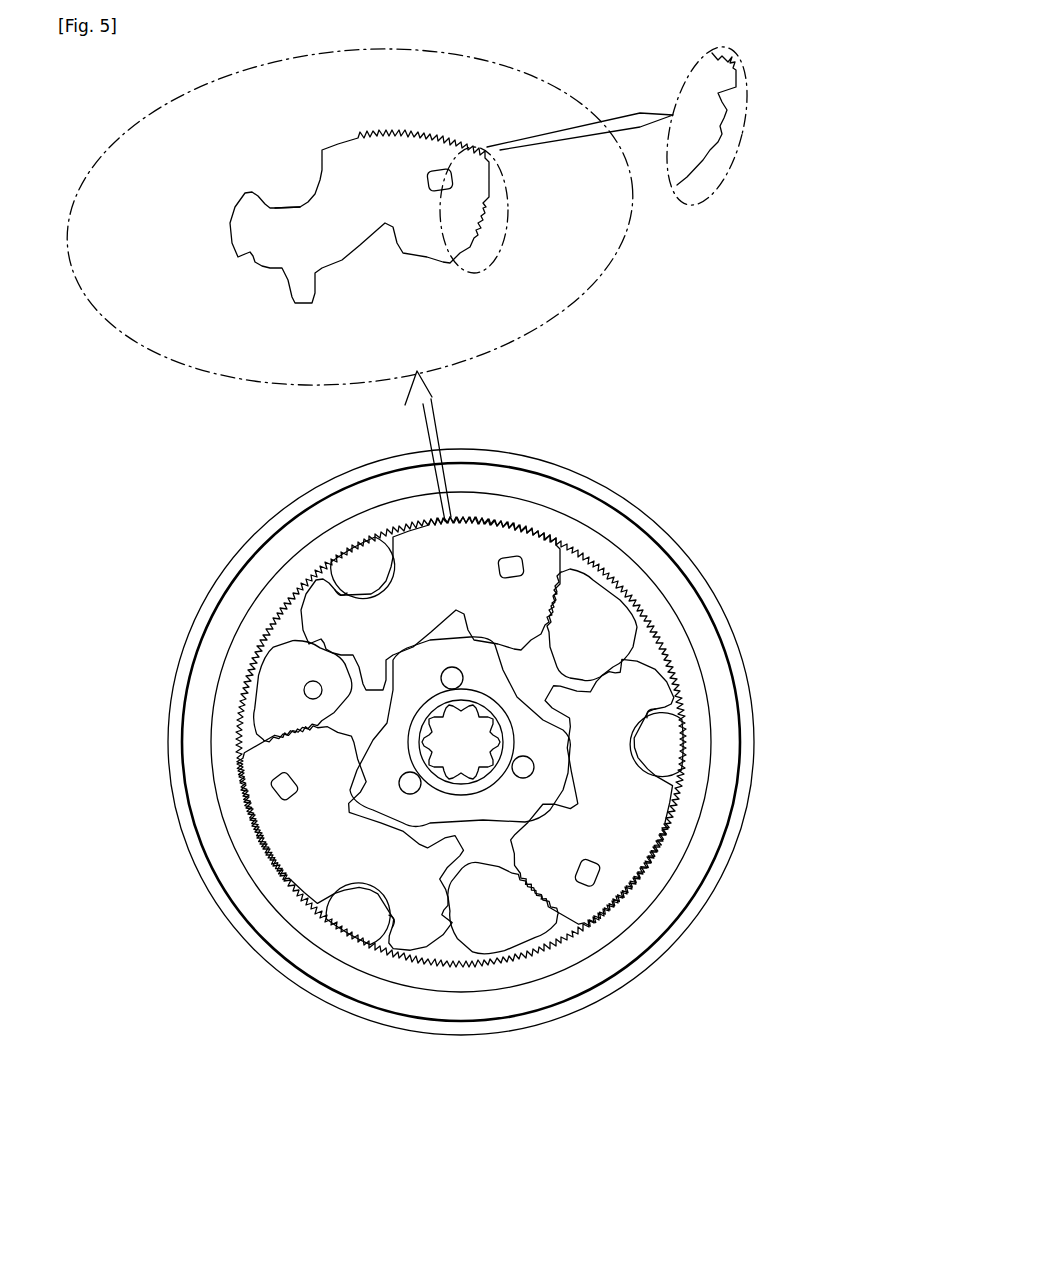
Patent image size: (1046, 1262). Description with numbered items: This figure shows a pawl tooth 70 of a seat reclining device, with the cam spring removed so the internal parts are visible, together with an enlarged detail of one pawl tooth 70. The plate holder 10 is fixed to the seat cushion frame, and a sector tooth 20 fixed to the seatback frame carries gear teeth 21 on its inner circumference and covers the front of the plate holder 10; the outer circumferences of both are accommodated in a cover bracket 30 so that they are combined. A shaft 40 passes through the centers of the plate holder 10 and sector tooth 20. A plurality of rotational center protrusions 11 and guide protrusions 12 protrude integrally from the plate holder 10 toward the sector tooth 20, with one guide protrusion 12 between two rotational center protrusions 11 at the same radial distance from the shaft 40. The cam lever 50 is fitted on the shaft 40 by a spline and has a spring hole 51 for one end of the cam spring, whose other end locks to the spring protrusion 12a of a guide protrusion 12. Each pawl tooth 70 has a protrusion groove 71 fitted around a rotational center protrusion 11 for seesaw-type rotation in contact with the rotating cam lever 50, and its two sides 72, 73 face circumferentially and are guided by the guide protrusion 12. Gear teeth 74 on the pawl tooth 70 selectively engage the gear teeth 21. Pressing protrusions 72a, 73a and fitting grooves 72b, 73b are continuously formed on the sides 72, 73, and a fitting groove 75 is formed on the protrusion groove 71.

The plate holder 10 is at (660, 655).
The rotational center protrusion 11 is at (370, 550).
The guide protrusion 12 is at (605, 620).
The spring protrusion 12a is at (313, 690).
The sector tooth 20 is at (250, 637).
The gear teeth 21 is at (290, 628).
The cover bracket 30 is at (277, 518).
The shaft 40 is at (445, 742).
The cam lever 50 is at (443, 810).
The spring hole 51 is at (455, 678).
The pawl tooth 70 is at (340, 150).
The protrusion groove 71 is at (310, 195).
The side of pawl tooth 72 is at (143, 262).
The pressing protrusion 72a is at (250, 255).
The fitting groove 72b is at (253, 262).
The side of pawl tooth 73 is at (575, 190).
The pressing protrusion 73a is at (482, 216).
The fitting groove 73b is at (486, 202).
The gear teeth 74 is at (428, 128).
The fitting groove 75 is at (270, 205).